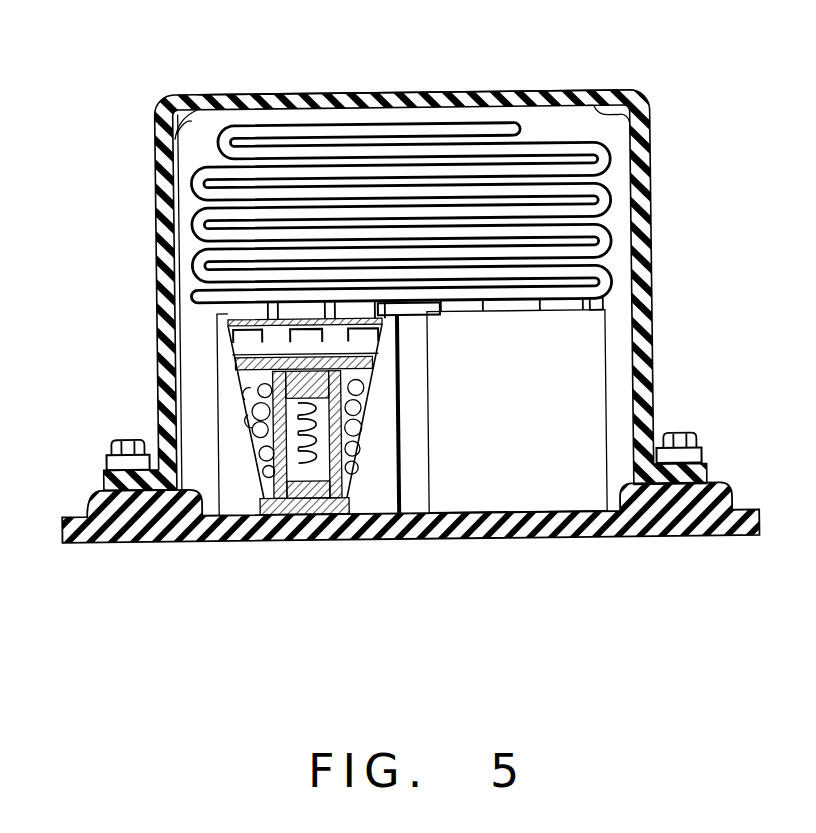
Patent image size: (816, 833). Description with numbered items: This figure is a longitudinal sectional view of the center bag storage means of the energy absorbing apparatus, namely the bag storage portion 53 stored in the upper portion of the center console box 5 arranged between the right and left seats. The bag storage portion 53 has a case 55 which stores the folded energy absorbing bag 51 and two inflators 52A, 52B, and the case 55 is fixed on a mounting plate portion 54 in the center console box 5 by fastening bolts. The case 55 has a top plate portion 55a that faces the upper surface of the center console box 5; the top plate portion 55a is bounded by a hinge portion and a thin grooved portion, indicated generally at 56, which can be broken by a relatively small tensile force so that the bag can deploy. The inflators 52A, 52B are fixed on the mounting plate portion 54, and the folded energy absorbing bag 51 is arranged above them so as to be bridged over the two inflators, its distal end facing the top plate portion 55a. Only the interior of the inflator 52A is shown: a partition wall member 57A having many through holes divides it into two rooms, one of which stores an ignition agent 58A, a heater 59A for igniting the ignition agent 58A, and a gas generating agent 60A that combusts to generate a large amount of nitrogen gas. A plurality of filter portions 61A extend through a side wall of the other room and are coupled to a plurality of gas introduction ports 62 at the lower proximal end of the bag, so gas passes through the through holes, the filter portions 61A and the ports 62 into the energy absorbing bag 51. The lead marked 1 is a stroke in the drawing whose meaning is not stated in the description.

The center console box 5 is at (238, 88).
The energy absorbing bag 51 is at (553, 146).
The inflator 52A is at (233, 502).
The inflator 52B is at (530, 500).
The bag storage portion 53 is at (408, 288).
The mounting plate portion 54 is at (597, 528).
The case 55 is at (160, 205).
The top plate portion 55a is at (380, 92).
The lip 56 is at (143, 142).
The partition wall member 57A is at (330, 375).
The ignition agent 58A is at (345, 392).
The heater 59A is at (330, 450).
The gas generating agent 60A is at (252, 412).
The filter portions 61A is at (322, 336).
The gas introduction ports 62 is at (230, 307).
The lead wire 1 is at (308, 518).